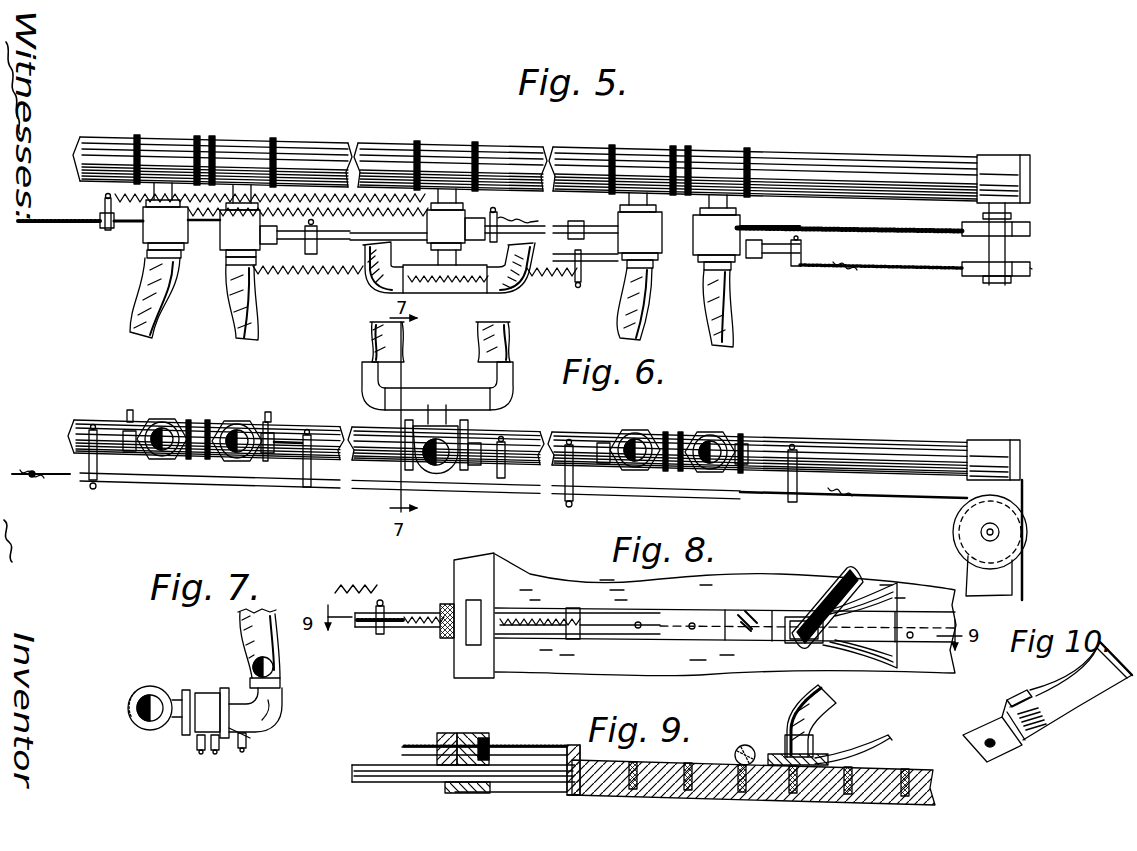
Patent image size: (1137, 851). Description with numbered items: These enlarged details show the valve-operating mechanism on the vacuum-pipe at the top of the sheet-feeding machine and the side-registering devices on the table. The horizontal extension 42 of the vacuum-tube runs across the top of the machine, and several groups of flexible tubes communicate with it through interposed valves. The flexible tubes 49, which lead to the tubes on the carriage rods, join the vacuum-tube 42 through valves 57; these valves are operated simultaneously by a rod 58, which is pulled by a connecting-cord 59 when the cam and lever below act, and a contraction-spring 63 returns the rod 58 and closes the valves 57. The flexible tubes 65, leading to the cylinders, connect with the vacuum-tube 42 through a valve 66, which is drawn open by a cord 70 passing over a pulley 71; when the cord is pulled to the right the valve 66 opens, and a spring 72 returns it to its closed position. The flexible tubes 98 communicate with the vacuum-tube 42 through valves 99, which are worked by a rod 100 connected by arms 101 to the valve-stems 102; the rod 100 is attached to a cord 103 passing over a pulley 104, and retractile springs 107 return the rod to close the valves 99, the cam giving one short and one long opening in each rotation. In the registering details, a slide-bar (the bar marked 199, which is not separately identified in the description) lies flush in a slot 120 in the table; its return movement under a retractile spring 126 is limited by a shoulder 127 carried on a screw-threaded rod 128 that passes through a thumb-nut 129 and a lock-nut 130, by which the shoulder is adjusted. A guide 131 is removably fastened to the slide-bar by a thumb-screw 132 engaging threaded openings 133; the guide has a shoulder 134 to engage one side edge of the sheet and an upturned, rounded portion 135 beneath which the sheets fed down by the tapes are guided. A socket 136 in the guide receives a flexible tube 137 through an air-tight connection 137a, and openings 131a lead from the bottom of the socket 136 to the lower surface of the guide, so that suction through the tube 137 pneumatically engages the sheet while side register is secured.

In FIG. 5, the horizontal extension of vacuum-tube 42 is at (293, 155).
In FIG. 6, the horizontal extension of vacuum-tube 42 is at (842, 441).
In FIG. 7, the horizontal extension of vacuum-tube 42 is at (146, 691).
In FIG. 5, the flexible tubes 49 is at (173, 303).
In FIG. 5, the valves 57 is at (402, 221).
In FIG. 6, the valves 57 is at (162, 426).
In FIG. 5, the rod 58 is at (308, 220).
In FIG. 7, the rod 58 is at (218, 748).
In FIG. 5, the connecting-cord 59 is at (80, 219).
In FIG. 6, the connecting-cord 59 is at (22, 478).
In FIG. 5, the contraction-spring 63 is at (323, 193).
In FIG. 5, the flexible tubes 65 is at (380, 288).
In FIG. 7, the flexible tubes 65 is at (268, 616).
In FIG. 5, the valve 66 is at (447, 241).
In FIG. 6, the valve 66 is at (470, 440).
In FIG. 7, the valve 66 is at (203, 691).
In FIG. 5, the cord 70 is at (813, 229).
In FIG. 7, the cord 70 is at (199, 745).
In FIG. 5, the pulley 71 is at (1021, 233).
In FIG. 5, the spring 72 is at (372, 217).
In FIG. 5, the flexible tubes 98 is at (255, 309).
In FIG. 5, the valves 99 is at (480, 223).
In FIG. 6, the valves 99 is at (240, 428).
In FIG. 5, the rod 100 is at (773, 262).
In FIG. 7, the rod 100 is at (247, 746).
In FIG. 5, the arms 101 is at (318, 237).
In FIG. 6, the arms 101 is at (311, 476).
In FIG. 7, the arms 101 is at (240, 736).
In FIG. 5, the valve-stems 102 is at (298, 240).
In FIG. 6, the valve-stems 102 is at (287, 446).
In FIG. 5, the cord 103 is at (895, 266).
In FIG. 6, the cord 103 is at (900, 498).
In FIG. 5, the pulley 104 is at (1022, 280).
In FIG. 6, the pulley 104 is at (1012, 525).
In FIG. 5, the retractile springs 107 is at (327, 278).
In FIG. 8, the slot 120 is at (528, 686).
In FIG. 8, the retractile spring 126 is at (350, 590).
In FIG. 8, the shoulder 127 is at (578, 610).
In FIG. 9, the shoulder 127 is at (587, 761).
In FIG. 8, the screw-threaded rod 128 is at (577, 658).
In FIG. 9, the screw-threaded rod 128 is at (512, 745).
In FIG. 8, the thumb-nut 129 is at (473, 600).
In FIG. 9, the thumb-nut 129 is at (457, 733).
In FIG. 8, the lock-nut 130 is at (445, 604).
In FIG. 9, the lock-nut 130 is at (442, 733).
In FIG. 9, the guide 131 is at (830, 755).
In FIG. 10, the guide 131 is at (1062, 707).
In FIG. 10, the openings 131a is at (1035, 727).
In FIG. 8, the thumb-screw 132 is at (745, 612).
In FIG. 9, the thumb-screw 132 is at (752, 750).
In FIG. 8, the threaded openings 133 is at (640, 628).
In FIG. 9, the threaded openings 133 is at (648, 758).
In FIG. 9, the shoulder 134 is at (782, 767).
In FIG. 10, the shoulder 134 is at (1020, 743).
In FIG. 8, the upturned and rounded portion 135 is at (893, 618).
In FIG. 9, the upturned and rounded portion 135 is at (882, 742).
In FIG. 10, the upturned and rounded portion 135 is at (1103, 657).
In FIG. 8, the socket 136 is at (810, 643).
In FIG. 9, the socket 136 is at (812, 746).
In FIG. 10, the socket 136 is at (1007, 700).
In FIG. 8, the flexible tube 137 is at (826, 585).
In FIG. 9, the flexible tube 137 is at (797, 712).
In FIG. 9, the air-tight connection 137a is at (787, 762).
In FIG. 8, the rod 199 is at (628, 617).